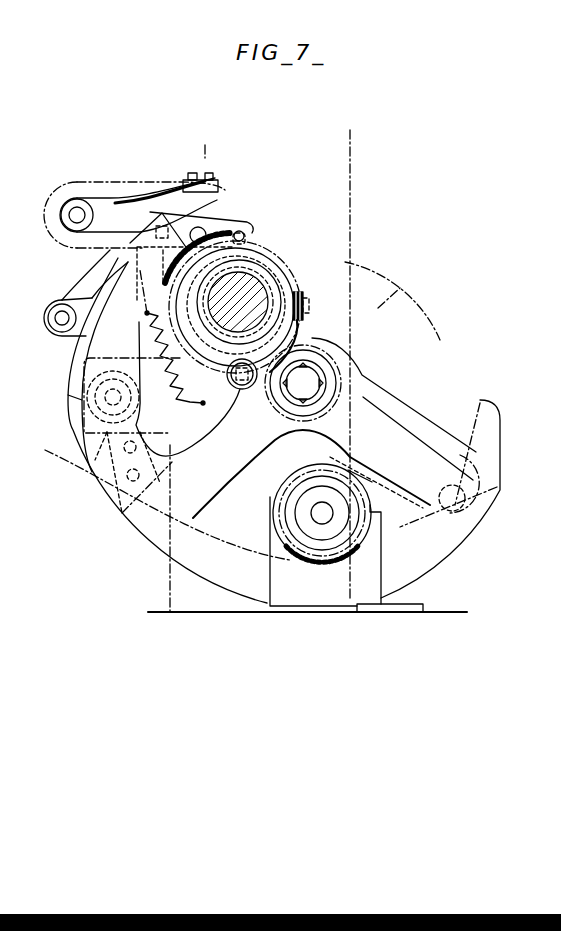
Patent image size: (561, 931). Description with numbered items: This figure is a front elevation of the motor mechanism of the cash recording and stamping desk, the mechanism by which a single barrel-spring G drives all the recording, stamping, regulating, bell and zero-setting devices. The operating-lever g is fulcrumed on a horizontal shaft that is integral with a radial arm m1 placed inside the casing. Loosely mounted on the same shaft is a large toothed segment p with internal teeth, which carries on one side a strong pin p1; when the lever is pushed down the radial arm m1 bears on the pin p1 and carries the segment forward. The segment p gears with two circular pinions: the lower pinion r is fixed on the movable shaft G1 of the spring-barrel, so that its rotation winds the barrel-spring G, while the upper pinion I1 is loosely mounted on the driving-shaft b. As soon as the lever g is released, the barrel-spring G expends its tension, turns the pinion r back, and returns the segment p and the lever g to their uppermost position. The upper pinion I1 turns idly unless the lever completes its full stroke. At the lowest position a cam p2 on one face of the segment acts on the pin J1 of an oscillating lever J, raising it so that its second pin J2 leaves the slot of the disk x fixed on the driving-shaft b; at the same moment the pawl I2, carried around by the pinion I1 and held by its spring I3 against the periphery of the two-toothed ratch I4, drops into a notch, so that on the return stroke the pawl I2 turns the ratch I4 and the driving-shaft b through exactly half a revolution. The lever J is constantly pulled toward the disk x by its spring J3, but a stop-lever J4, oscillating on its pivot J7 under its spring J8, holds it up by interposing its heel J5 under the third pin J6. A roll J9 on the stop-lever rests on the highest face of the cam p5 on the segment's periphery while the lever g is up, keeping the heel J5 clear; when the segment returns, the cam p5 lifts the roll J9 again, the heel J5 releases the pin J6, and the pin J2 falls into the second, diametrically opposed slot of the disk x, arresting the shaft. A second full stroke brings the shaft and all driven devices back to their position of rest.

The oscillating lever J is at (95, 205).
The pin of oscillating lever J1 is at (203, 228).
The second pin of oscillating lever J2 is at (245, 232).
The spring of oscillating lever J3 is at (160, 186).
The stop-lever J4 is at (80, 288).
The heel of stop-lever J5 is at (187, 174).
The third pin of oscillating lever J6 is at (168, 225).
The pivot of stop-lever J7 is at (110, 399).
The spring of stop-lever J8 is at (180, 375).
The roll of stop-lever J9 is at (56, 319).
The upper pinion I1 is at (302, 268).
The pawl I2 is at (246, 390).
The pawl spring I3 is at (306, 333).
The two-toothed ratch I4 is at (288, 288).
The slotted disk x is at (274, 255).
The operating-lever g is at (392, 307).
The radial arm m1 is at (394, 423).
The driving-shaft b is at (322, 402).
The toothed segment p is at (272, 371).
The pin of segment p1 is at (458, 513).
The cam on face of segment p2 is at (112, 447).
The cam on periphery of segment p5 is at (73, 372).
The barrel-spring G is at (272, 518).
The movable shaft of spring-barrel G1 is at (321, 506).
The lower pinion r is at (366, 513).